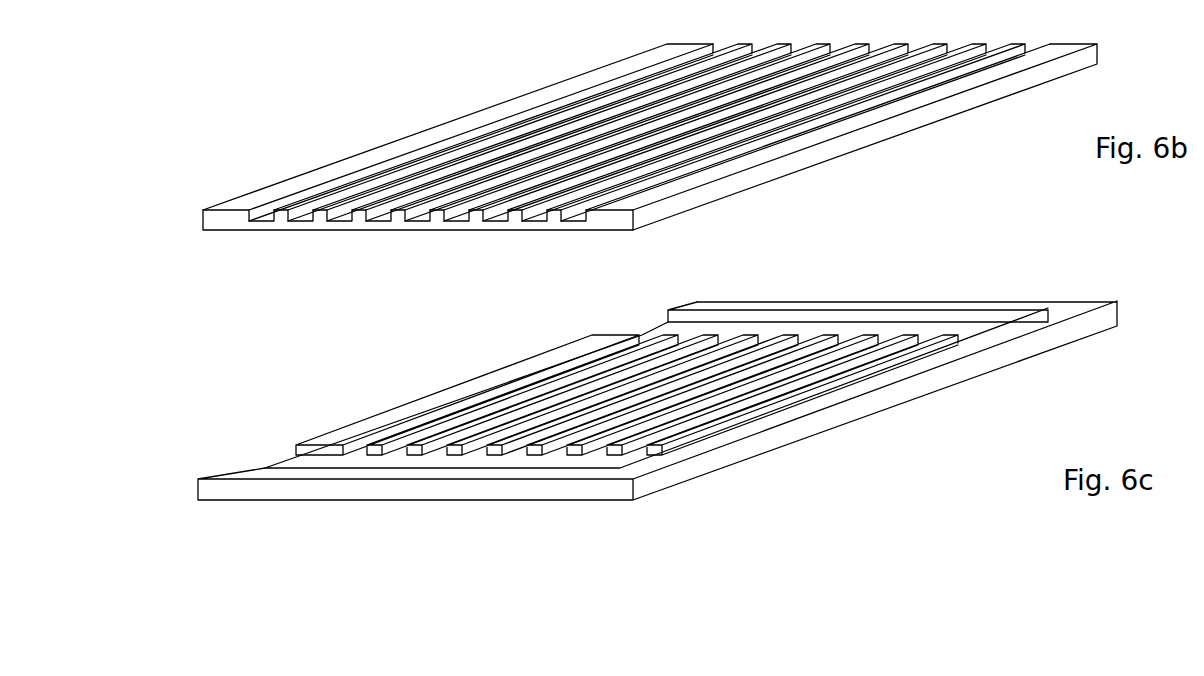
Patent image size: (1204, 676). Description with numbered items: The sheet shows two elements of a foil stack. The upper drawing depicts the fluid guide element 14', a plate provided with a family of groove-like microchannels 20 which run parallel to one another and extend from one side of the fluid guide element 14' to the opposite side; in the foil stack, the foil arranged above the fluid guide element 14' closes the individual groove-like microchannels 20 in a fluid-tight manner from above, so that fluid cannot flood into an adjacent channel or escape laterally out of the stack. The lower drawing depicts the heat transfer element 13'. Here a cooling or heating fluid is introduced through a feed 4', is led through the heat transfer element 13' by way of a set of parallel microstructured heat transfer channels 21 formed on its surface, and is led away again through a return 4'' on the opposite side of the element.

In FIG. 6B, the fluid guide element 14' is at (650, 178).
In FIG. 6B, the groove-like microchannels 20 is at (567, 212).
In FIG. 6C, the heat transfer element 13' is at (657, 400).
In FIG. 6C, the return 4'' is at (642, 388).
In FIG. 6C, the feed 4' is at (826, 301).
In FIG. 6C, the microstructured heat transfer channels 21 is at (673, 426).